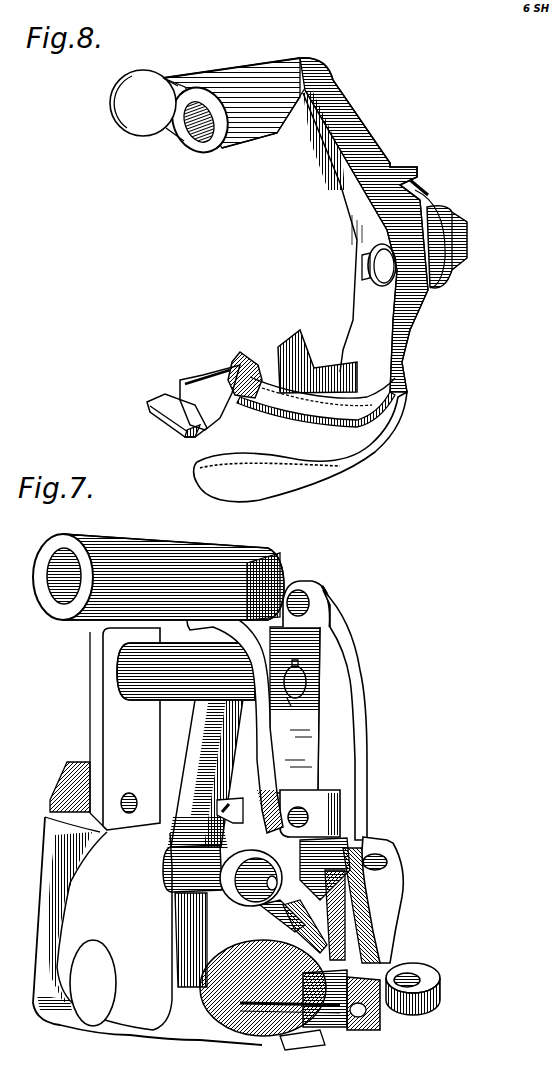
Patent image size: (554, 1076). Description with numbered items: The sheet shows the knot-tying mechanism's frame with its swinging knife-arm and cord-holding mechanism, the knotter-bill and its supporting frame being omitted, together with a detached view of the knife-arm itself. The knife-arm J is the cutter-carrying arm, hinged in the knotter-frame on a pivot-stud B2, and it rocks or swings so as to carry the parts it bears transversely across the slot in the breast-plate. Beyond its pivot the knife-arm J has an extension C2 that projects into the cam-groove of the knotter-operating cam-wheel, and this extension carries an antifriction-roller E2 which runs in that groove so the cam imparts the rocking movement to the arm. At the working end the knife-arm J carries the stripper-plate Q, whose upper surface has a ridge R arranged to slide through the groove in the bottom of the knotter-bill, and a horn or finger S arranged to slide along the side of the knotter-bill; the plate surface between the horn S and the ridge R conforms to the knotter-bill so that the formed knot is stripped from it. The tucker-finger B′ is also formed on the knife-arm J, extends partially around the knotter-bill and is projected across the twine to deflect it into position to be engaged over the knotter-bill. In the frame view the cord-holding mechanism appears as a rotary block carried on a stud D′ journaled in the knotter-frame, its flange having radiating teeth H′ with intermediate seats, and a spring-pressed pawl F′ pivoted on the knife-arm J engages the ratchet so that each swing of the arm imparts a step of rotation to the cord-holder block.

In FIG. 8, the extension C2 is at (197, 67).
In FIG. 8, the antifriction-roller E2 is at (134, 127).
In FIG. 8, the knife-arm J is at (367, 140).
In FIG. 7, the knife-arm J is at (190, 742).
In FIG. 8, the radiating teeth H′ is at (420, 310).
In FIG. 8, the horn or finger S is at (240, 354).
In FIG. 8, the ridge R is at (207, 373).
In FIG. 8, the stripper-plate Q is at (173, 403).
In FIG. 8, the tucker-finger B′ is at (233, 487).
In FIG. 7, the tucker-finger B′ is at (103, 952).
In FIG. 7, the pivot-stud B2 is at (290, 684).
In FIG. 7, the spring-pressed pawl F′ is at (285, 890).
In FIG. 7, the stud D′ is at (378, 1013).